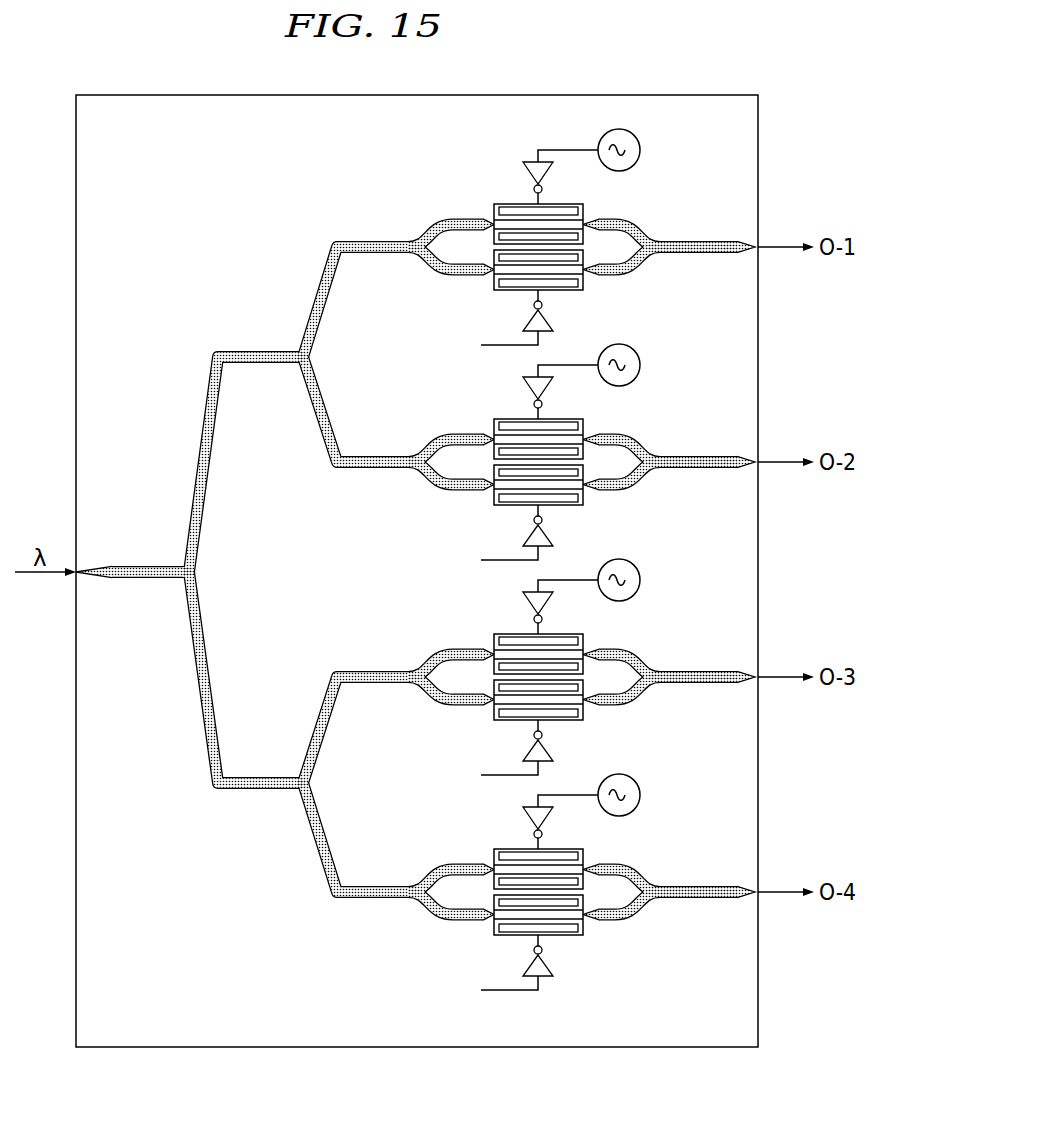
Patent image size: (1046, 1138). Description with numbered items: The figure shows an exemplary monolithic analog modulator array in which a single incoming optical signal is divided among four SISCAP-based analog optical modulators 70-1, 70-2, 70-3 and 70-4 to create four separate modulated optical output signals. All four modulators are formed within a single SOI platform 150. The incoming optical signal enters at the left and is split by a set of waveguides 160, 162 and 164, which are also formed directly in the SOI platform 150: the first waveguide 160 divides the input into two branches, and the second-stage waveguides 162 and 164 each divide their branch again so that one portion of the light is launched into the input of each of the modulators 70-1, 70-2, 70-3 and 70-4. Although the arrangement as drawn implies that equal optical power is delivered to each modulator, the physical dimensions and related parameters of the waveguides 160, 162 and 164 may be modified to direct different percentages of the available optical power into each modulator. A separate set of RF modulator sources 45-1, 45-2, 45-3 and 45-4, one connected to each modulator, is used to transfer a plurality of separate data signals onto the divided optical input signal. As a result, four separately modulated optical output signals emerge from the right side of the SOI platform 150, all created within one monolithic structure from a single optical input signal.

The SOI platform 150 is at (624, 108).
The waveguide 160 is at (181, 566).
The waveguide 162 is at (297, 351).
The waveguide 164 is at (297, 790).
The SISCAP-based analog optical modulator 70-1 is at (494, 205).
The SISCAP-based analog optical modulator 70-2 is at (494, 420).
The SISCAP-based analog optical modulator 70-3 is at (494, 635).
The SISCAP-based analog optical modulator 70-4 is at (494, 850).
The RF modulator source 45-1 is at (640, 150).
The RF modulator source 45-2 is at (640, 365).
The RF modulator source 45-3 is at (640, 580).
The RF modulator source 45-4 is at (640, 795).